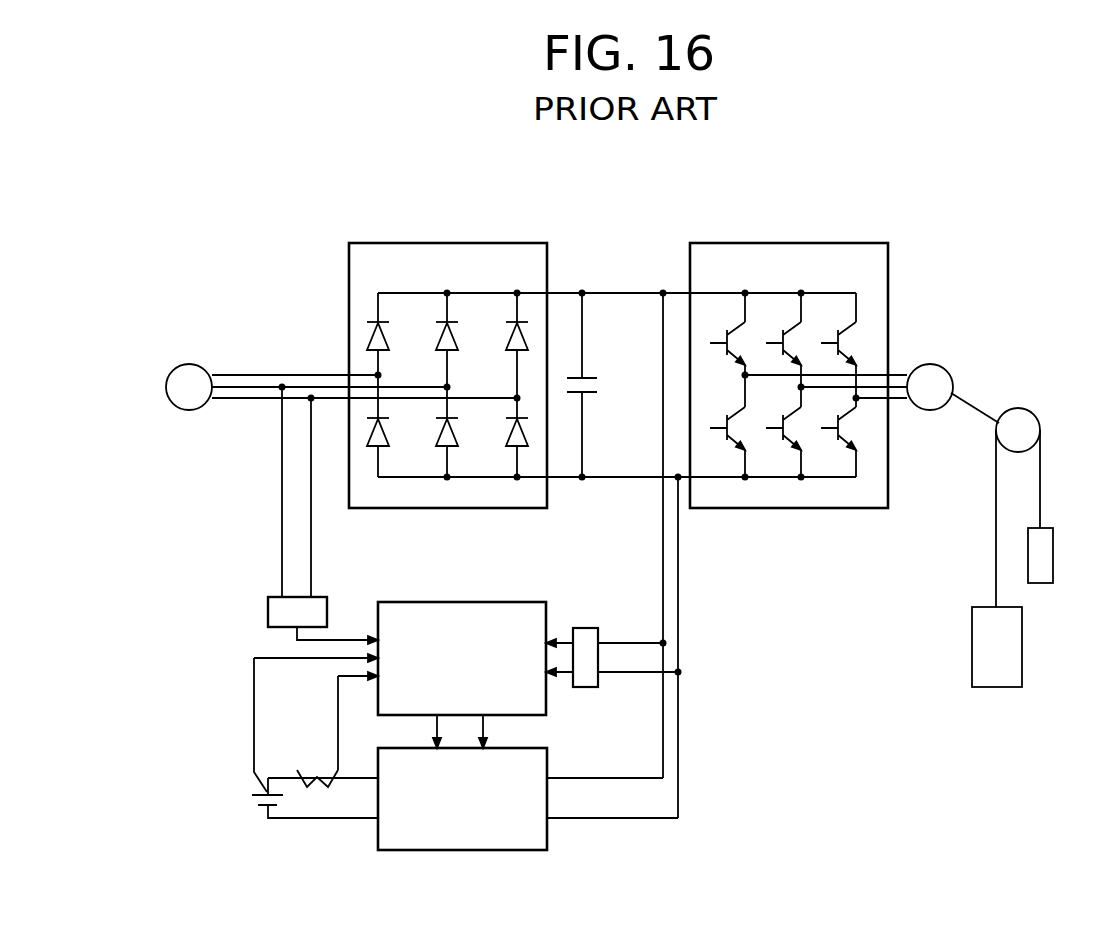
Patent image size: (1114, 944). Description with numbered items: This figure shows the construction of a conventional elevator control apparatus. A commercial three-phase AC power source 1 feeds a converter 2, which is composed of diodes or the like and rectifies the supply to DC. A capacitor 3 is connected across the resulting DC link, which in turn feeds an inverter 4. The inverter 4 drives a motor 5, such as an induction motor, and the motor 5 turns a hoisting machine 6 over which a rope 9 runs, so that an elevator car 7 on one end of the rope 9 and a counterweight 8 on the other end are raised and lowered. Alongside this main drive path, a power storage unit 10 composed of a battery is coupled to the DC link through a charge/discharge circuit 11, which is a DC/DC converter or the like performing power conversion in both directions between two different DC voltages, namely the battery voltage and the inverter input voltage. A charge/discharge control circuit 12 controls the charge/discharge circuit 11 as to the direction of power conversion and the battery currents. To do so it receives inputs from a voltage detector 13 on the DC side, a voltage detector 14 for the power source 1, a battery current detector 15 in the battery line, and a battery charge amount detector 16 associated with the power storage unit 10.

The commercial three-phase AC power source 1 is at (189, 364).
The converter 2 is at (424, 243).
The capacitor 3 is at (588, 378).
The inverter 4 is at (733, 243).
The motor 5 is at (928, 364).
The hoisting machine 6 is at (1018, 408).
The elevator car 7 is at (972, 650).
The counterweight 8 is at (1043, 528).
The rope 9 is at (997, 533).
The power storage unit 10 is at (258, 800).
The charge/discharge circuit 11 is at (485, 852).
The charge/discharge control circuit 12 is at (515, 602).
The voltage detector 13 is at (588, 628).
The voltage detector for the power source 14 is at (268, 612).
The battery current detector 15 is at (315, 772).
The battery charge amount detector 16 is at (265, 792).